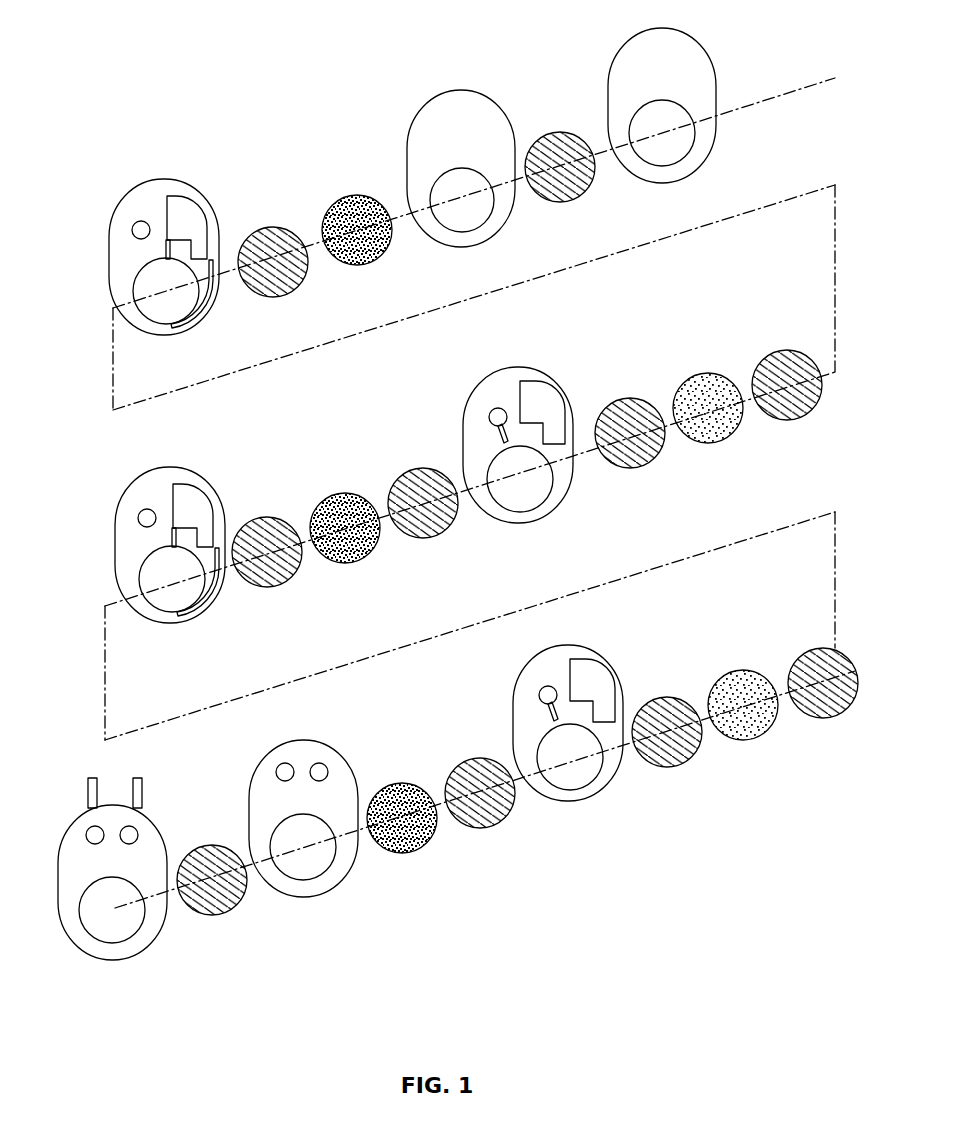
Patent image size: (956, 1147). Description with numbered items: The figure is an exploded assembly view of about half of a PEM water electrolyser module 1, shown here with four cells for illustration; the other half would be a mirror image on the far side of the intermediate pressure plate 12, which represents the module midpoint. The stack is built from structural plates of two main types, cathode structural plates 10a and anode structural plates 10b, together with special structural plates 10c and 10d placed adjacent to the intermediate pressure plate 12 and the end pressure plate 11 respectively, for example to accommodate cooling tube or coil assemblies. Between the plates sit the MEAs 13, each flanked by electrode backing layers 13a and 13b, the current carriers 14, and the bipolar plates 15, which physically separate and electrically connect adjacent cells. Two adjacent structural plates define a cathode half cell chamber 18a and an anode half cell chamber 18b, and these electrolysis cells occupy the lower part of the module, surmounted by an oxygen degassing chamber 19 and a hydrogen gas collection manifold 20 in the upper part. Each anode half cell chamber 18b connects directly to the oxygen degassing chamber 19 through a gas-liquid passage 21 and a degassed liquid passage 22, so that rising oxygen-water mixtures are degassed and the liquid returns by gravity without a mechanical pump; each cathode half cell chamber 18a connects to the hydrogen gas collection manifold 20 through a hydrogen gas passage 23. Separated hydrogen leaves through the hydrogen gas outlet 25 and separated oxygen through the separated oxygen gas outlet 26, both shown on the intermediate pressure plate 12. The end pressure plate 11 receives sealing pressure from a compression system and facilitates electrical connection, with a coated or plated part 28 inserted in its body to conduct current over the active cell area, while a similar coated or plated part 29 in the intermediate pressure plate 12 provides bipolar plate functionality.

The electrolyser module 1 is at (482, 52).
The cathode structural plate 10a is at (537, 512).
The anode structural plate 10b is at (152, 332).
The special structural plate 10c is at (307, 890).
The special structural plate 10d is at (497, 220).
The end pressure plate 11 is at (705, 163).
The intermediate pressure plate 12 is at (155, 943).
The MEA 13 is at (717, 441).
The electrode backing layer 13a is at (632, 466).
The electrode backing layer 13b is at (800, 419).
The current carrier 14 is at (287, 294).
The bipolar plate 15 is at (365, 263).
The cathode half cell chamber 18a is at (538, 485).
The anode half cell chamber 18b is at (167, 308).
The oxygen degassing chamber 19 is at (194, 221).
The hydrogen gas collection manifold 20 is at (133, 223).
The gas-liquid passage 21 is at (162, 247).
The degassed liquid passage 22 is at (207, 305).
The hydrogen gas passage 23 is at (494, 433).
The hydrogen gas outlet 25 is at (87, 785).
The separated oxygen gas outlet 26 is at (143, 785).
The coated or plated part 28 is at (673, 133).
The coated or plated part 29 is at (102, 927).